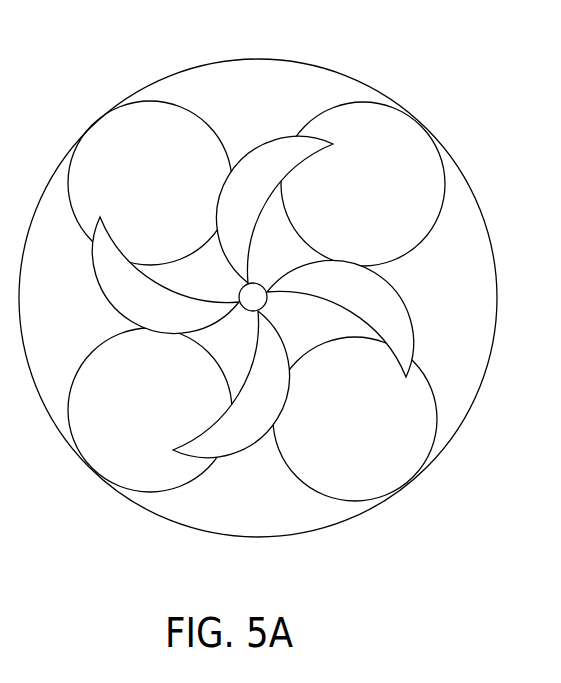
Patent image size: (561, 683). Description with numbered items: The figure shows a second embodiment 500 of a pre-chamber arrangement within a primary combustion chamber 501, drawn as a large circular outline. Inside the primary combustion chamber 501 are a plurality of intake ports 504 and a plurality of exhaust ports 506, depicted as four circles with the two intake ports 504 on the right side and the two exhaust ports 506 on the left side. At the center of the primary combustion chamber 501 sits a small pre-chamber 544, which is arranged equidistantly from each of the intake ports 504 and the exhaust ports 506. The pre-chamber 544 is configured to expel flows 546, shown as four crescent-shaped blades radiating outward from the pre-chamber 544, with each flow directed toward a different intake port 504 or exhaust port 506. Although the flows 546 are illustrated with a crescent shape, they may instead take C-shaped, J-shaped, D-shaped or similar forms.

The second embodiment 500 is at (456, 71).
The primary combustion chamber 501 is at (143, 88).
The intake ports 504 is at (356, 192).
The exhaust ports 506 is at (132, 192).
The pre-chamber 544 is at (267, 305).
The flows 546 is at (105, 289).